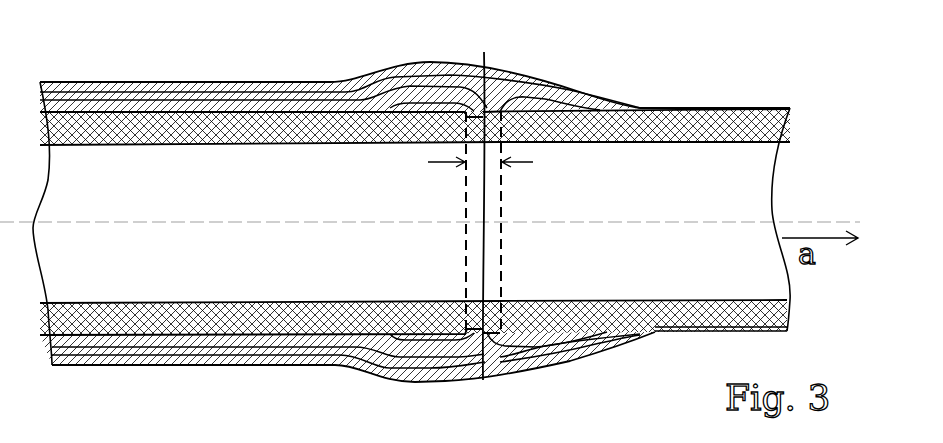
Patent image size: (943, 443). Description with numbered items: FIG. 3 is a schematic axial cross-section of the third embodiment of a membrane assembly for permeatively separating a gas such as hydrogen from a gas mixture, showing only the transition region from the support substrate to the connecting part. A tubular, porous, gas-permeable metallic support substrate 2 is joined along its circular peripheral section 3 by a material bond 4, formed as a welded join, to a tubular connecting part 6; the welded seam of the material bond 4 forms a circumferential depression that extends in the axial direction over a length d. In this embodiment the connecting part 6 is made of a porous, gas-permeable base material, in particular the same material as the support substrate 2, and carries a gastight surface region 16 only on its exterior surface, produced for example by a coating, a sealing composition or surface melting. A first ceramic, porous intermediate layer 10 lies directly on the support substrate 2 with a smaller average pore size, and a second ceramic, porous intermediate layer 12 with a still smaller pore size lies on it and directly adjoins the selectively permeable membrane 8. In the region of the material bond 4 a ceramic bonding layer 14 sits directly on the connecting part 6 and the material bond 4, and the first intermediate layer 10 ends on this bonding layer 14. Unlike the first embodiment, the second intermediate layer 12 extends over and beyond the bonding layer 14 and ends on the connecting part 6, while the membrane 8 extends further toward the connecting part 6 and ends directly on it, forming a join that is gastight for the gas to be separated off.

The support substrate 2 is at (192, 122).
The peripheral section 3 is at (484, 200).
The material bond 4 is at (491, 202).
The connecting part 6 is at (712, 118).
The membrane 8 is at (83, 356).
The first intermediate layer 10 is at (135, 338).
The second intermediate layer 12 is at (188, 348).
The bonding layer 14 is at (534, 374).
The gastight surface region 16 is at (656, 333).